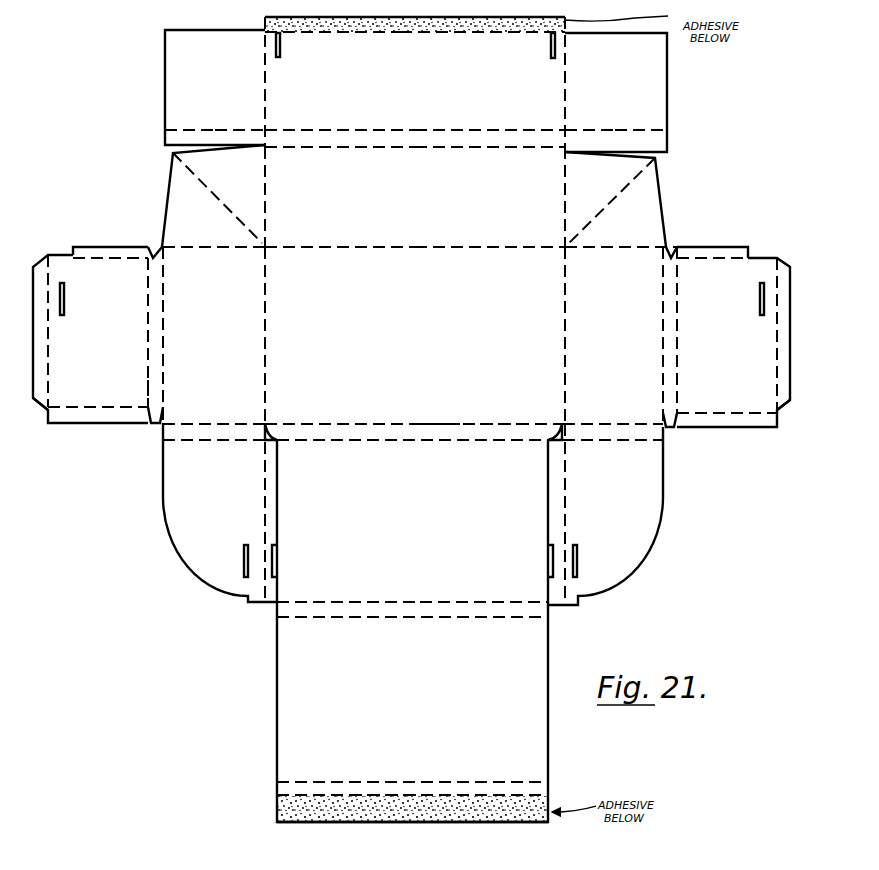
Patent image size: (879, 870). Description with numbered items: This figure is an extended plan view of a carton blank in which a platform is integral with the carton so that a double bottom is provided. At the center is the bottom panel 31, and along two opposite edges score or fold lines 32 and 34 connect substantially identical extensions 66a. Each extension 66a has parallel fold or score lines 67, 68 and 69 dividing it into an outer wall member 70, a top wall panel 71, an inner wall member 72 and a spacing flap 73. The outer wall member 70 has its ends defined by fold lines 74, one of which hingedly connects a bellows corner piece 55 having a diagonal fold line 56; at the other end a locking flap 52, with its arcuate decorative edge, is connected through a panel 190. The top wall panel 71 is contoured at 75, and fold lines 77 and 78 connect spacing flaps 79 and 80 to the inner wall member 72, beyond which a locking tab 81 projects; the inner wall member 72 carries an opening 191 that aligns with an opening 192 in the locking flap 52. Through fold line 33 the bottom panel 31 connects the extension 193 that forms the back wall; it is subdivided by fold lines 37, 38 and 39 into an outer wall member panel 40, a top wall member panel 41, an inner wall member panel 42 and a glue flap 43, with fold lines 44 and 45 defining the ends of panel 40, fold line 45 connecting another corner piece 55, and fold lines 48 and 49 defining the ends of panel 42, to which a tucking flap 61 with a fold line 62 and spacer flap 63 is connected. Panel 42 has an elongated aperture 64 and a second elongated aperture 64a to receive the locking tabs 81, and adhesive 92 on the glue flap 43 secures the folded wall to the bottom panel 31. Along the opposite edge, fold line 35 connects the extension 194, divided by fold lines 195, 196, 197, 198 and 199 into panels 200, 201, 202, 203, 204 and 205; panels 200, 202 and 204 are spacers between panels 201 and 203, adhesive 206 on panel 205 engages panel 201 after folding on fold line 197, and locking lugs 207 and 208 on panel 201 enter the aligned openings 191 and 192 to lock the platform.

The bottom panel 31 is at (417, 351).
The score or fold line 32 is at (266, 370).
The score or fold line 33 is at (470, 250).
The score or fold line 34 is at (564, 380).
The score or fold line 35 is at (439, 429).
The score or fold line 37 is at (453, 150).
The score or fold line 38 is at (428, 121).
The score or fold line 39 is at (345, 33).
The outer wall member panel 40 is at (391, 236).
The top wall member panel 41 is at (470, 131).
The inner wall member panel 42 is at (535, 145).
The glue flap 43 is at (398, 33).
The score or fold line 44 is at (266, 194).
The score or fold line 45 is at (565, 212).
The score or fold line 48 is at (266, 92).
The score or fold line 49 is at (565, 105).
The locking flap 52 is at (206, 560).
The corner piece 55 is at (173, 207).
The score or fold line 56 is at (241, 201).
The tucking flap 61 is at (168, 76).
The score or fold line 62 is at (190, 129).
The spacer flap 63 is at (221, 134).
The elongated aperture 64 is at (551, 48).
The second elongated aperture 64a is at (281, 45).
The extension 66a is at (771, 451).
The fold or score line 67 is at (165, 335).
The fold or score line 68 is at (148, 368).
The fold or score line 69 is at (50, 372).
The outer wall member 70 is at (243, 345).
The top wall panel 71 is at (165, 300).
The inner wall member 72 is at (150, 383).
The spacing flap 73 is at (40, 405).
The score or fold line 74 is at (205, 249).
The contour 75 is at (151, 251).
The score or fold line 77 is at (715, 262).
The score or fold line 78 is at (113, 411).
The spacing flap 79 is at (104, 251).
The spacing flap 80 is at (88, 420).
The locking tab 81 is at (55, 257).
The adhesive 92 is at (472, 33).
The panel 190 is at (195, 438).
The opening 191 is at (65, 300).
The opening 192 is at (243, 561).
The extension 193 is at (689, 166).
The extension 194 is at (656, 637).
The score or fold line 195 is at (310, 440).
The score or fold line 196 is at (451, 613).
The score or fold line 197 is at (455, 618).
The score or fold line 198 is at (463, 786).
The score or fold line 199 is at (411, 795).
The spacer panel 200 is at (497, 431).
The panel 201 is at (366, 457).
The spacer panel 202 is at (397, 611).
The panel 203 is at (548, 690).
The spacer panel 204 is at (548, 783).
The panel 205 is at (410, 821).
The adhesive 206 is at (470, 821).
The locking lug 207 is at (279, 563).
The locking lug 208 is at (548, 566).